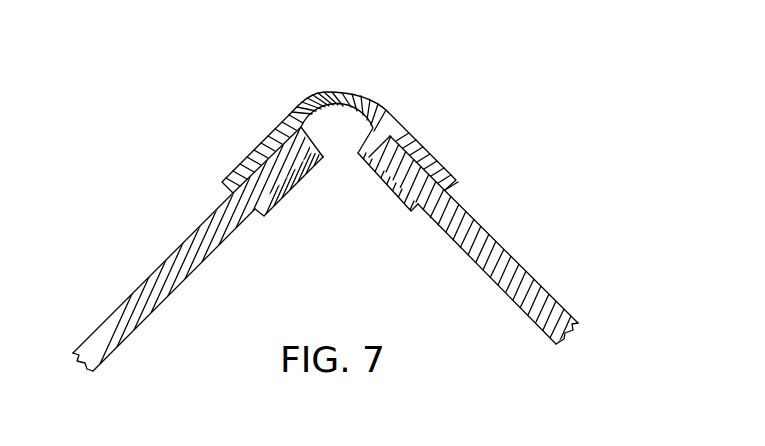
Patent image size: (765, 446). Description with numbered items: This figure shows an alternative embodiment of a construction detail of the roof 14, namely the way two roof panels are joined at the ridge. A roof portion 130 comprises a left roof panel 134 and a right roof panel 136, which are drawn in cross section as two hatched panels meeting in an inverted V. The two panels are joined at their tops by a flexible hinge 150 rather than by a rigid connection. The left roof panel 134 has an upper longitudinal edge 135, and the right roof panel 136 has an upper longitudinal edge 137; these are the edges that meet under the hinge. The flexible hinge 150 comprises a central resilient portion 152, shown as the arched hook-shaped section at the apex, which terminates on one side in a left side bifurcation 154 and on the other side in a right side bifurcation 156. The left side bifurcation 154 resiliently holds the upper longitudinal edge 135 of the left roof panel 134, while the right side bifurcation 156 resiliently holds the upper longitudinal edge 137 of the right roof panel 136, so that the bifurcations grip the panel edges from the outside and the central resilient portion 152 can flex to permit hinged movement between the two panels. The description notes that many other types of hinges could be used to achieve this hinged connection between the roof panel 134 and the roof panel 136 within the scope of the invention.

The roof 14 is at (358, 207).
The roof portion 130 is at (540, 241).
The left roof panel 134 is at (148, 278).
The upper longitudinal edge 135 is at (282, 214).
The right roof panel 136 is at (483, 224).
The upper longitudinal edge 137 is at (386, 190).
The flexible hinge 150 is at (388, 122).
The central resilient portion 152 is at (338, 97).
The left side bifurcation 154 is at (254, 145).
The right side bifurcation 156 is at (422, 146).